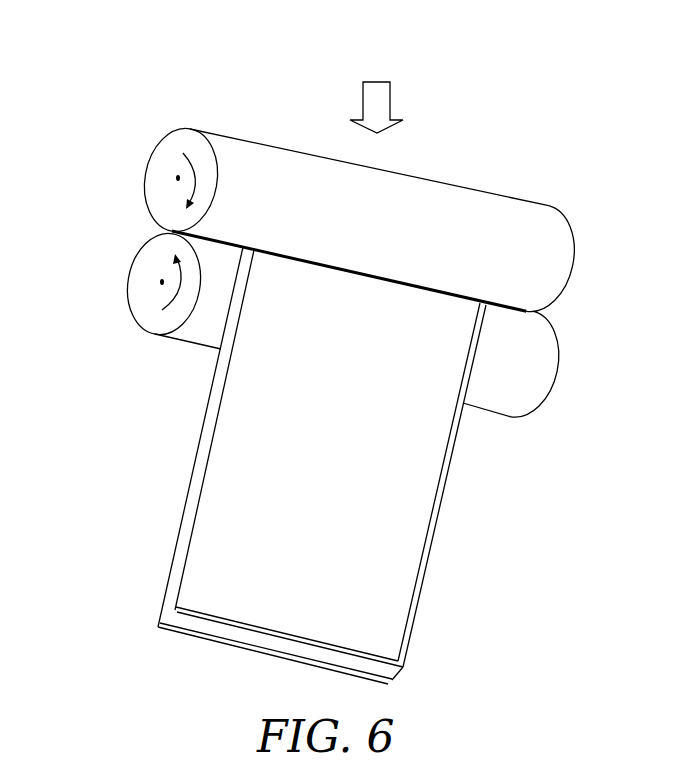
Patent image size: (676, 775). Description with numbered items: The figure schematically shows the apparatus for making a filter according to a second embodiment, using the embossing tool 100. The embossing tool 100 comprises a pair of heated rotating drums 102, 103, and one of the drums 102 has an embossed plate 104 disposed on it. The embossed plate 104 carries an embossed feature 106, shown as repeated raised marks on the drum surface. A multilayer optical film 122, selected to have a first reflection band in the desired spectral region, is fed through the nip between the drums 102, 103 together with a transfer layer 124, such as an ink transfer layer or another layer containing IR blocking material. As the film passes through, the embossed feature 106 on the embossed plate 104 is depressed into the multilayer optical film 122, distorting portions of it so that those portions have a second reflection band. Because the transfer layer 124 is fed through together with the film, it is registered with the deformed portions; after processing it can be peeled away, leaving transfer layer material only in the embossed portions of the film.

The embossing tool 100 is at (147, 85).
The heated rotating drum 102 is at (155, 177).
The heated rotating drum 103 is at (140, 300).
The embossed plate 104 is at (456, 190).
The embossed feature 106 is at (308, 187).
The multilayer optical film 122 is at (190, 540).
The transfer layer 124 is at (402, 515).